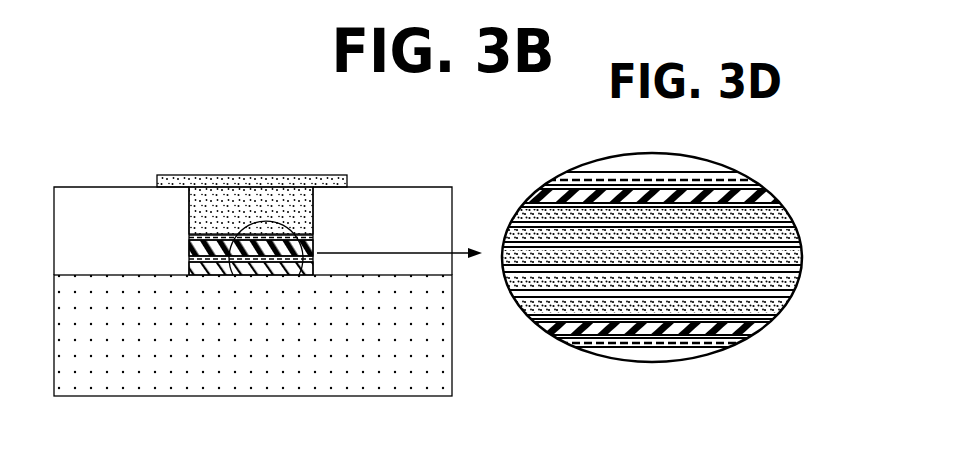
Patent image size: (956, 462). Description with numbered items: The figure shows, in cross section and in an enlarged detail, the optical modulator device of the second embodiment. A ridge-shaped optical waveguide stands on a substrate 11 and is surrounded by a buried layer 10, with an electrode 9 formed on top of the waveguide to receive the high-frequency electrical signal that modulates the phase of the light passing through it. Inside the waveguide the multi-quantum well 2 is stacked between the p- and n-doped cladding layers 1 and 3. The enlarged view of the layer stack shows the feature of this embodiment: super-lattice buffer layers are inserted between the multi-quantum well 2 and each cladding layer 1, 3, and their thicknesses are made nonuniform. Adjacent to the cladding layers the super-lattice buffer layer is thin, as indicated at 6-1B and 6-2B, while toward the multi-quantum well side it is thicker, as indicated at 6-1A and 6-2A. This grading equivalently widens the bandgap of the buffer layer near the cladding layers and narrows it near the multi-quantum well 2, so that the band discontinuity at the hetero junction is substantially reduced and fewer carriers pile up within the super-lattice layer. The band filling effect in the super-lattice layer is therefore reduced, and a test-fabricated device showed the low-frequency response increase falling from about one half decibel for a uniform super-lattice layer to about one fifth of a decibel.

In FIG. 3B, the cladding layer 1 is at (234, 207).
In FIG. 3D, the cladding layer 1 is at (671, 163).
In FIG. 3B, the multi-quantum well 2 is at (282, 238).
In FIG. 3D, the multi-quantum well 2 is at (798, 205).
In FIG. 3B, the cladding layer 3 is at (189, 272).
In FIG. 3D, the cladding layer 3 is at (645, 356).
In FIG. 3B, the electrode 9 is at (193, 175).
In FIG. 3B, the buried layer 10 is at (389, 208).
In FIG. 3B, the substrate 11 is at (253, 335).
In FIG. 3D, the thicker super-lattice buffer layer portion 6-1A is at (578, 190).
In FIG. 3D, the thin super-lattice buffer layer portion 6-1B is at (613, 178).
In FIG. 3D, the thicker super-lattice buffer layer portion 6-2A is at (704, 320).
In FIG. 3D, the thin super-lattice buffer layer portion 6-2B is at (678, 346).